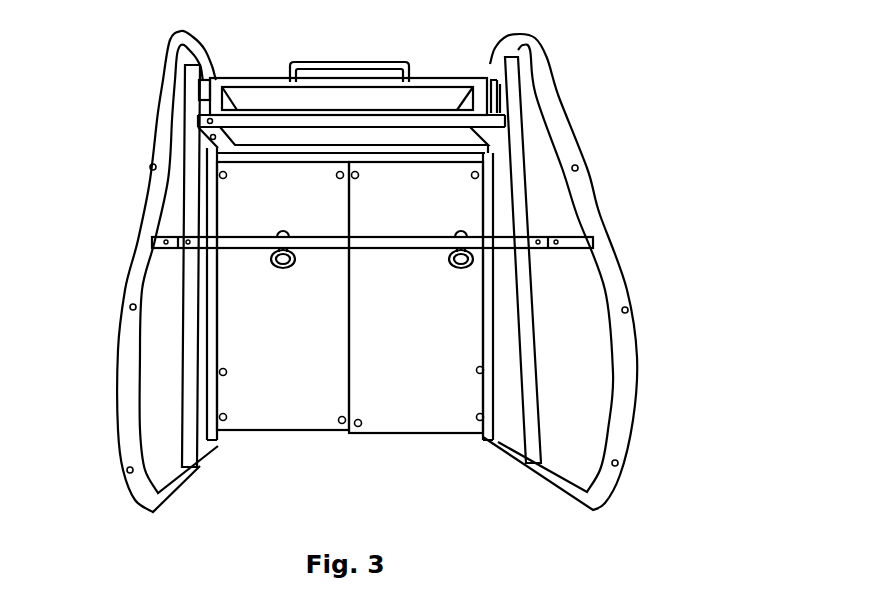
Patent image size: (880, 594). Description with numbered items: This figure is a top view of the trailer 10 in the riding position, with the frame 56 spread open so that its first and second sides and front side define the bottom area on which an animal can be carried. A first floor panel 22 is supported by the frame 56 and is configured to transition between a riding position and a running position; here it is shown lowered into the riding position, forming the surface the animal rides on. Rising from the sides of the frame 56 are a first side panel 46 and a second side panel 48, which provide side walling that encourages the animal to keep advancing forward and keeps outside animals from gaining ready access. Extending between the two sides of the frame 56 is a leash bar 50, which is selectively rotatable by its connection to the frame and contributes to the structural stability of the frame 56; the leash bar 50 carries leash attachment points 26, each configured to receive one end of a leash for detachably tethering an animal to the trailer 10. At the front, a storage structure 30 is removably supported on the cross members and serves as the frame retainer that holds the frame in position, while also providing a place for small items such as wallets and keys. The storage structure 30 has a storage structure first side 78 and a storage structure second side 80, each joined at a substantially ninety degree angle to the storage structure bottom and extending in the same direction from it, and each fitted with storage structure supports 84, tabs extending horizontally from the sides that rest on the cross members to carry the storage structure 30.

The trailer 10 is at (720, 117).
The first floor panel 22 is at (462, 203).
The leash attachment point 26 is at (298, 262).
The storage structure 30 is at (351, 76).
The first side panel 46 is at (158, 382).
The second side panel 48 is at (573, 272).
The leash bar 50 is at (200, 242).
The frame 56 is at (130, 437).
The storage structure first side 78 is at (360, 97).
The storage structure second side 80 is at (258, 137).
The storage structure supports 84 is at (227, 117).